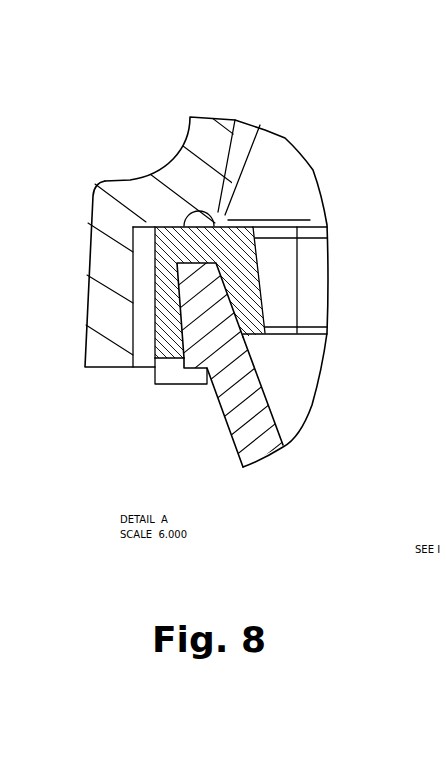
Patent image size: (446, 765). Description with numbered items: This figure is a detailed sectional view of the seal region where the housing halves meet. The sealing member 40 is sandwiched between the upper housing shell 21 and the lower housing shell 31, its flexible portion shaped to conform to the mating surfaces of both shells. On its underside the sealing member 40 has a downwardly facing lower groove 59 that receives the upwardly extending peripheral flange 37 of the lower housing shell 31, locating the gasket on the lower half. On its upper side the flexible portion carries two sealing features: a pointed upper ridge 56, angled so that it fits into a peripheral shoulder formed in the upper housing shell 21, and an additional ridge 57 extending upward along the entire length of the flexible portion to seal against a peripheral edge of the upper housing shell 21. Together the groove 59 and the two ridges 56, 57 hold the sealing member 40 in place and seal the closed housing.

The upper housing shell 21 is at (191, 136).
The upper ridge 56 is at (146, 222).
The additional ridge 57 is at (204, 221).
The lower groove 59 is at (327, 226).
The peripheral flange 37 is at (210, 297).
The lower housing shell 31 is at (240, 428).
The sealing member 40 is at (157, 337).